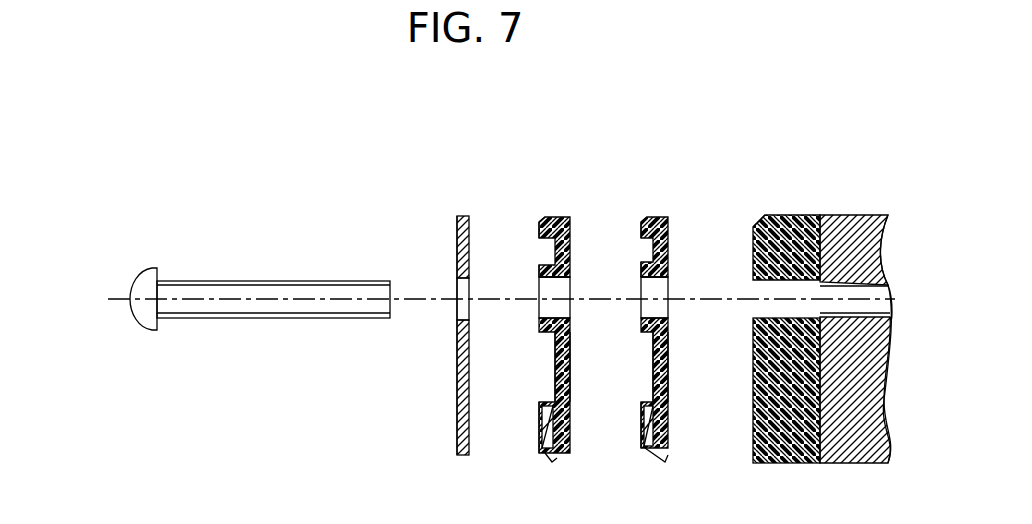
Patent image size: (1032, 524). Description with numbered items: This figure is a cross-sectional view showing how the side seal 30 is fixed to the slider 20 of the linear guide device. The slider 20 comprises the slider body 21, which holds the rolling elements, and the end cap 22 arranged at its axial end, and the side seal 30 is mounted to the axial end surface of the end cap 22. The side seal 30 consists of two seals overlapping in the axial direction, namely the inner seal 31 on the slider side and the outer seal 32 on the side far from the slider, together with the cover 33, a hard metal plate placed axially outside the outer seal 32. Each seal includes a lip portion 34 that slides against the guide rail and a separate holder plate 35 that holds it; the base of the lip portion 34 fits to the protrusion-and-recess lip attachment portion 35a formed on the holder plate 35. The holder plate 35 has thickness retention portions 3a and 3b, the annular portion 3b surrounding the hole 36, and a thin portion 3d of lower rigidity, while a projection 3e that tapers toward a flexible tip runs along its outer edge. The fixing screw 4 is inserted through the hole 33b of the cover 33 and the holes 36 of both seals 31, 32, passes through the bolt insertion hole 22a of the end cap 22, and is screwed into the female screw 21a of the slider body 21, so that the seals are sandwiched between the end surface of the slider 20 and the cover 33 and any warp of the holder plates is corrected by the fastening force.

The fixing screw 4 is at (276, 282).
The side seal 30 is at (678, 126).
The cover 33 is at (462, 215).
The hole 33b is at (456, 277).
The outer seal 32 is at (555, 215).
The inner seal 31 is at (659, 215).
The projection 3e is at (568, 216).
The thickness retention portion 3a is at (541, 223).
The thickness retention portion 3b is at (541, 267).
The hole 36 is at (541, 278).
The thin portion 3d is at (554, 366).
The holder plate 35 is at (570, 381).
The lip attachment portion 35a is at (545, 440).
The lip portion 34 is at (547, 461).
The slider 20 is at (792, 138).
The end cap 22 is at (776, 282).
The bolt insertion hole 22a is at (763, 215).
The slider body 21 is at (849, 313).
The female screw 21a is at (869, 216).